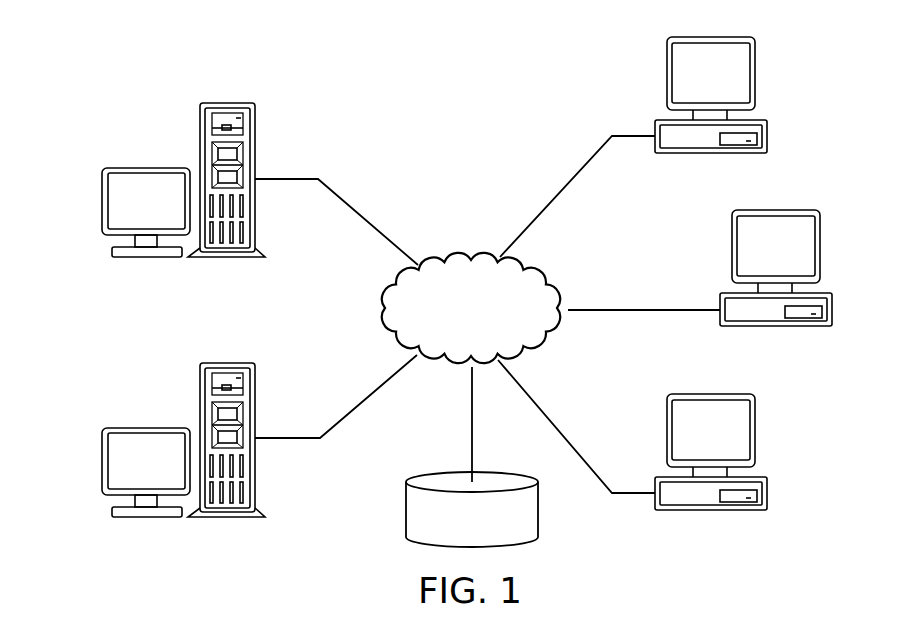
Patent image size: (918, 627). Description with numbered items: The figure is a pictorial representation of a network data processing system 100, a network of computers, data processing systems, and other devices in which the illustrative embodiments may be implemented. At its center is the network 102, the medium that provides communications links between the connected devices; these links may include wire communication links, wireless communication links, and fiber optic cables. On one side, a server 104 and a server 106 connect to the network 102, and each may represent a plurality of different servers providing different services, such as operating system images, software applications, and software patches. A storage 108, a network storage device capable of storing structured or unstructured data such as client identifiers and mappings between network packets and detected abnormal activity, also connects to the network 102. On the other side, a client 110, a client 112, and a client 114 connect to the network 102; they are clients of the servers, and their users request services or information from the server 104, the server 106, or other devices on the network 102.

The network data processing system 100 is at (326, 76).
The network 102 is at (467, 250).
The server 104 is at (102, 202).
The server 106 is at (102, 462).
The storage 108 is at (406, 508).
The client 110 is at (767, 128).
The client 112 is at (832, 300).
The client 114 is at (767, 500).